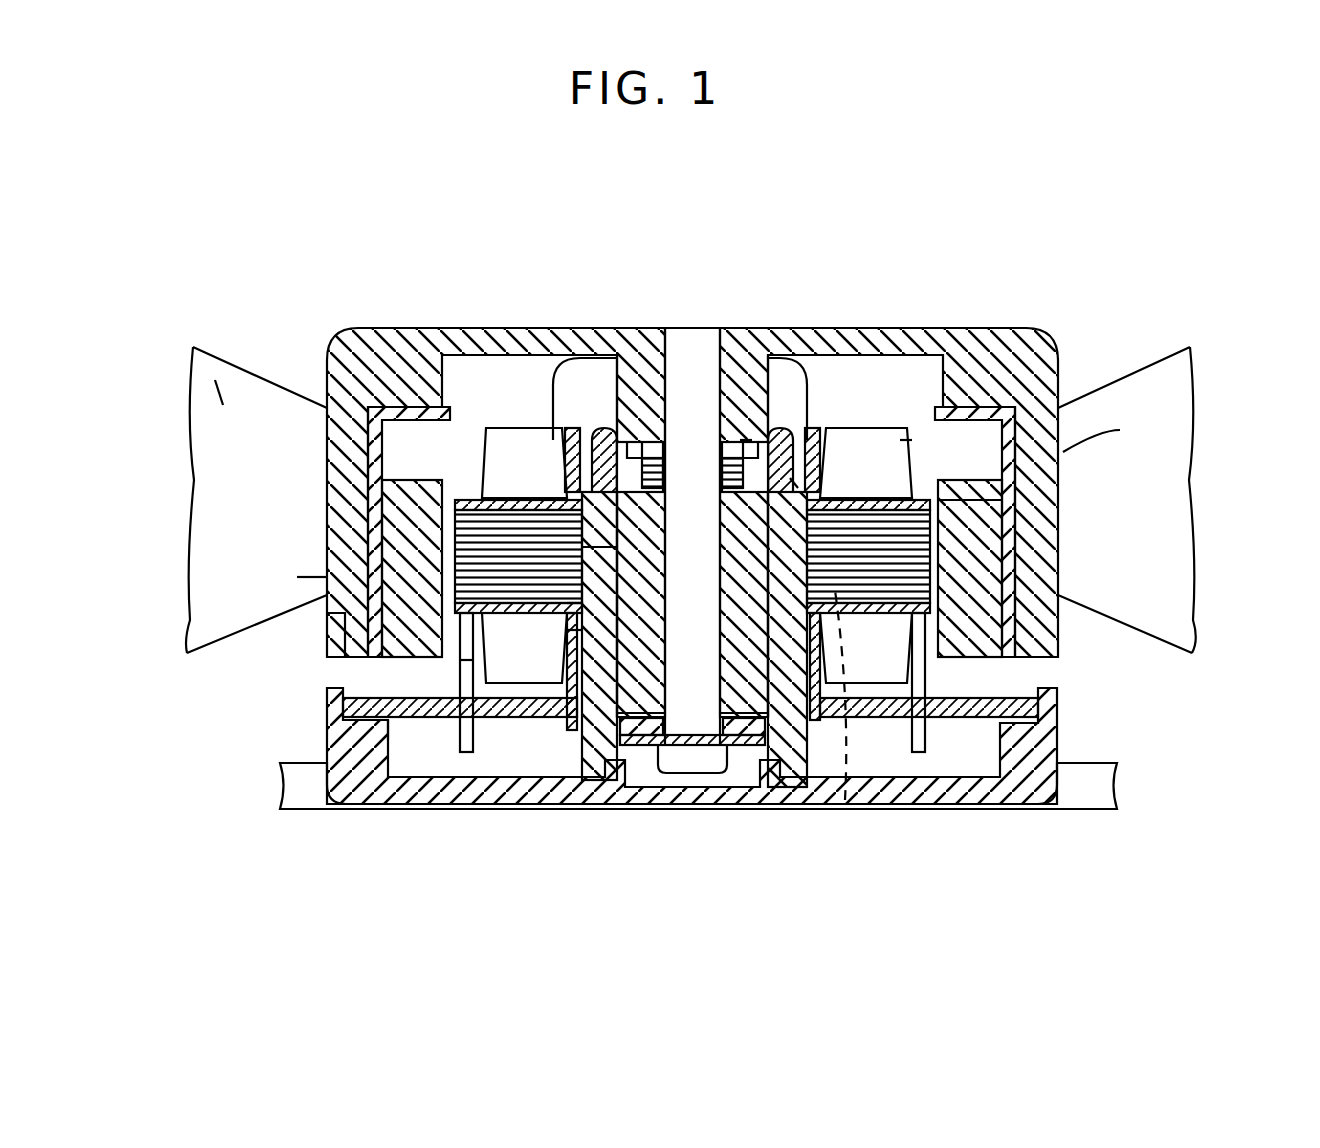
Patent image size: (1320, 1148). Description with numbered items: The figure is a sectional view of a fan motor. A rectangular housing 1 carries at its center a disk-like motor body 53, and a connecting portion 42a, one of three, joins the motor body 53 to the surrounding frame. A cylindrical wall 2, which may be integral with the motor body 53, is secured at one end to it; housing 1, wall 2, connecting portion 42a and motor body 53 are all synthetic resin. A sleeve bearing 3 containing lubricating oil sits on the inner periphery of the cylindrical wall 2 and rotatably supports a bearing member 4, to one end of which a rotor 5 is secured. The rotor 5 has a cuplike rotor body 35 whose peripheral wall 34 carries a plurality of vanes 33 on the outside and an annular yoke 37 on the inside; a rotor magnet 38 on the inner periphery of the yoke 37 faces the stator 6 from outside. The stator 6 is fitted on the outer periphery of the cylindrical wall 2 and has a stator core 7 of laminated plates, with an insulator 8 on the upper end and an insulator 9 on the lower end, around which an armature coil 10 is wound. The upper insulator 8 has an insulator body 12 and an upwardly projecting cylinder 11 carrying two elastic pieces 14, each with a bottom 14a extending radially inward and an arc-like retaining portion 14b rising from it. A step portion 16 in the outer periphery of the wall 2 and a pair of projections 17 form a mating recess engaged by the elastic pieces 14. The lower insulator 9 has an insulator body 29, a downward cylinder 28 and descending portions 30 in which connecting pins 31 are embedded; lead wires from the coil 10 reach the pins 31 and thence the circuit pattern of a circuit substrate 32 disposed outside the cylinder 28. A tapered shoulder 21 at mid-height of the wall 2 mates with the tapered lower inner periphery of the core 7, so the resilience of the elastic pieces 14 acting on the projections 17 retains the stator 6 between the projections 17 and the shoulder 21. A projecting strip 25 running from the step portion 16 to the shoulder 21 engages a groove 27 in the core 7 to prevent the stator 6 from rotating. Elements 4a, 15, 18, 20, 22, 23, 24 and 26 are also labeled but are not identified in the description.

The housing 1 is at (893, 800).
The cylindrical wall 2 is at (792, 768).
The sleeve bearing 3 is at (628, 690).
The bearing member 4 is at (696, 370).
The shaft end 4a is at (688, 360).
The rotor 5 is at (1072, 452).
The stator 6 is at (1060, 523).
The stator core 7 is at (1060, 567).
The insulator 8 is at (500, 481).
The insulator 9 is at (513, 617).
The armature coil 10 is at (905, 440).
The cylinder 11 is at (548, 425).
The insulator body 12 is at (468, 488).
The elastic pieces 14 is at (622, 453).
The bottom 14a is at (790, 478).
The arc-like retaining portion 14b is at (757, 457).
The stator core 15 is at (445, 550).
The step portion 16 is at (813, 455).
The projections 17 is at (598, 428).
The spacer 18 is at (585, 493).
The hub 20 is at (788, 392).
The shoulder 21 is at (578, 634).
The ring 22 is at (572, 606).
The sleeve 23 is at (746, 440).
The retainer 24 is at (572, 452).
The projecting strip 25 is at (845, 800).
The spacer 26 is at (610, 547).
The groove 27 is at (860, 540).
The cylinder 28 is at (570, 720).
The insulator body 29 is at (460, 667).
The descending portions 30 is at (460, 683).
The connecting pins 31 is at (473, 615).
The circuit substrate 32 is at (440, 720).
The vanes 33 is at (223, 405).
The peripheral wall 34 is at (327, 462).
The rotor body 35 is at (358, 318).
The annular yoke 37 is at (415, 593).
The rotor magnet 38 is at (297, 577).
The connecting portion 42a is at (1092, 793).
The motor body 53 is at (500, 717).